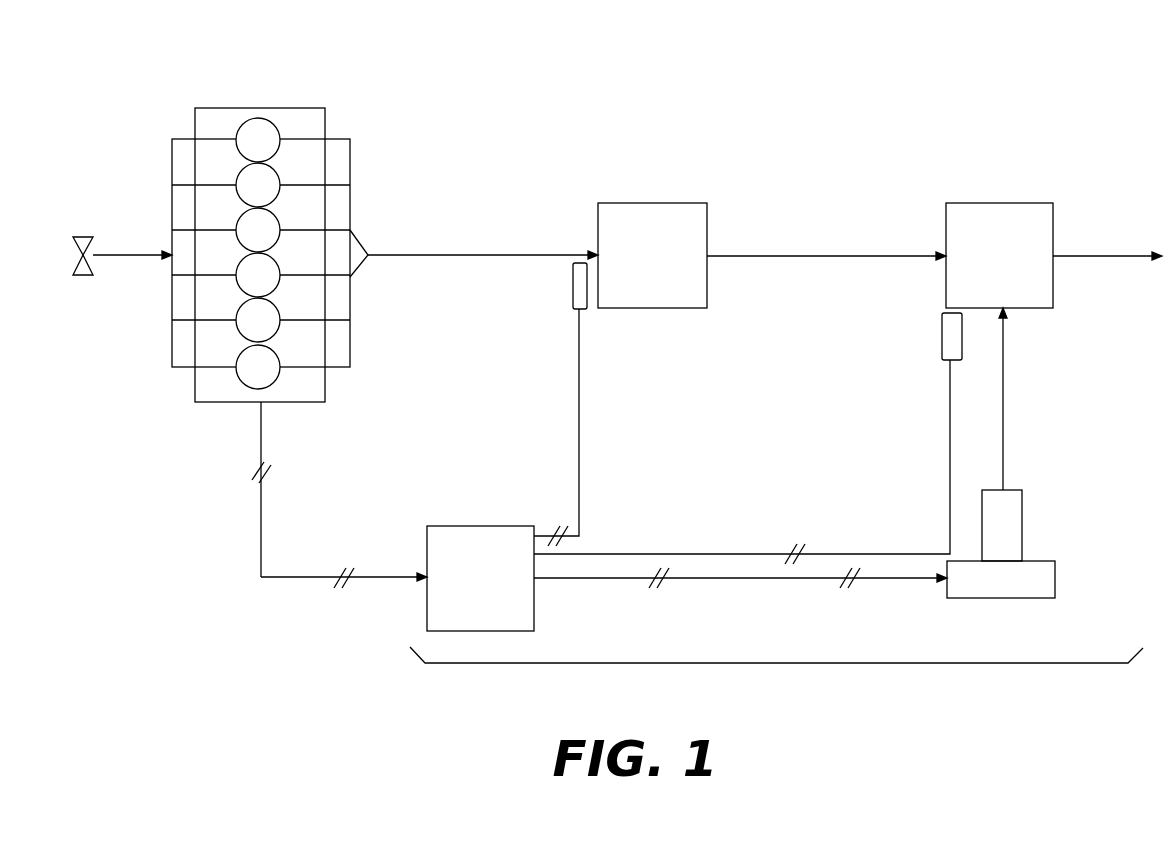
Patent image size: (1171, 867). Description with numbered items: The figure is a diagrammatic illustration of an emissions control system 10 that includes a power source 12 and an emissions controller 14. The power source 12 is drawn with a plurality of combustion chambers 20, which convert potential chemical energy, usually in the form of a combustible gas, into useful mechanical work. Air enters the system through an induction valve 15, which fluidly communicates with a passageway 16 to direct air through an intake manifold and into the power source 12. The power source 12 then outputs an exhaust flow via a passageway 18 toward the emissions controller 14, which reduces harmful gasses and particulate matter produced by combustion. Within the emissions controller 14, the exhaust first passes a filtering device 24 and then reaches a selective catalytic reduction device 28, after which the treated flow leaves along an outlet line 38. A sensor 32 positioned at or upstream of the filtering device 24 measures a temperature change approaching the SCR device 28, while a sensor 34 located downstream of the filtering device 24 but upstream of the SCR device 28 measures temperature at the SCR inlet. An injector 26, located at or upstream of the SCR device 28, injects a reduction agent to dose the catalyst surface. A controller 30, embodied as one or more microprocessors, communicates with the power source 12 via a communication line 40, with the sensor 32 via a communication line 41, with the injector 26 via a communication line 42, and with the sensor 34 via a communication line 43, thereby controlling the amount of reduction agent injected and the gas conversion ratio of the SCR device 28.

The emissions control system 10 is at (941, 82).
The power source 12 is at (284, 417).
The emissions controller 14 is at (790, 663).
The induction valve 15 is at (83, 276).
The passageway 16 is at (128, 254).
The passageway 18 is at (413, 254).
The combustion chambers 20 is at (258, 253).
The filtering device 24 is at (652, 203).
The injector 26 is at (1055, 575).
The selective catalytic reduction device 28 is at (998, 203).
The controller 30 is at (480, 526).
The sensor 32 is at (573, 283).
The sensor 34 is at (942, 340).
The outlet line 38 is at (1115, 255).
The communication line 40 is at (370, 577).
The communication line 41 is at (579, 378).
The communication line 42 is at (752, 579).
The communication line 43 is at (950, 412).